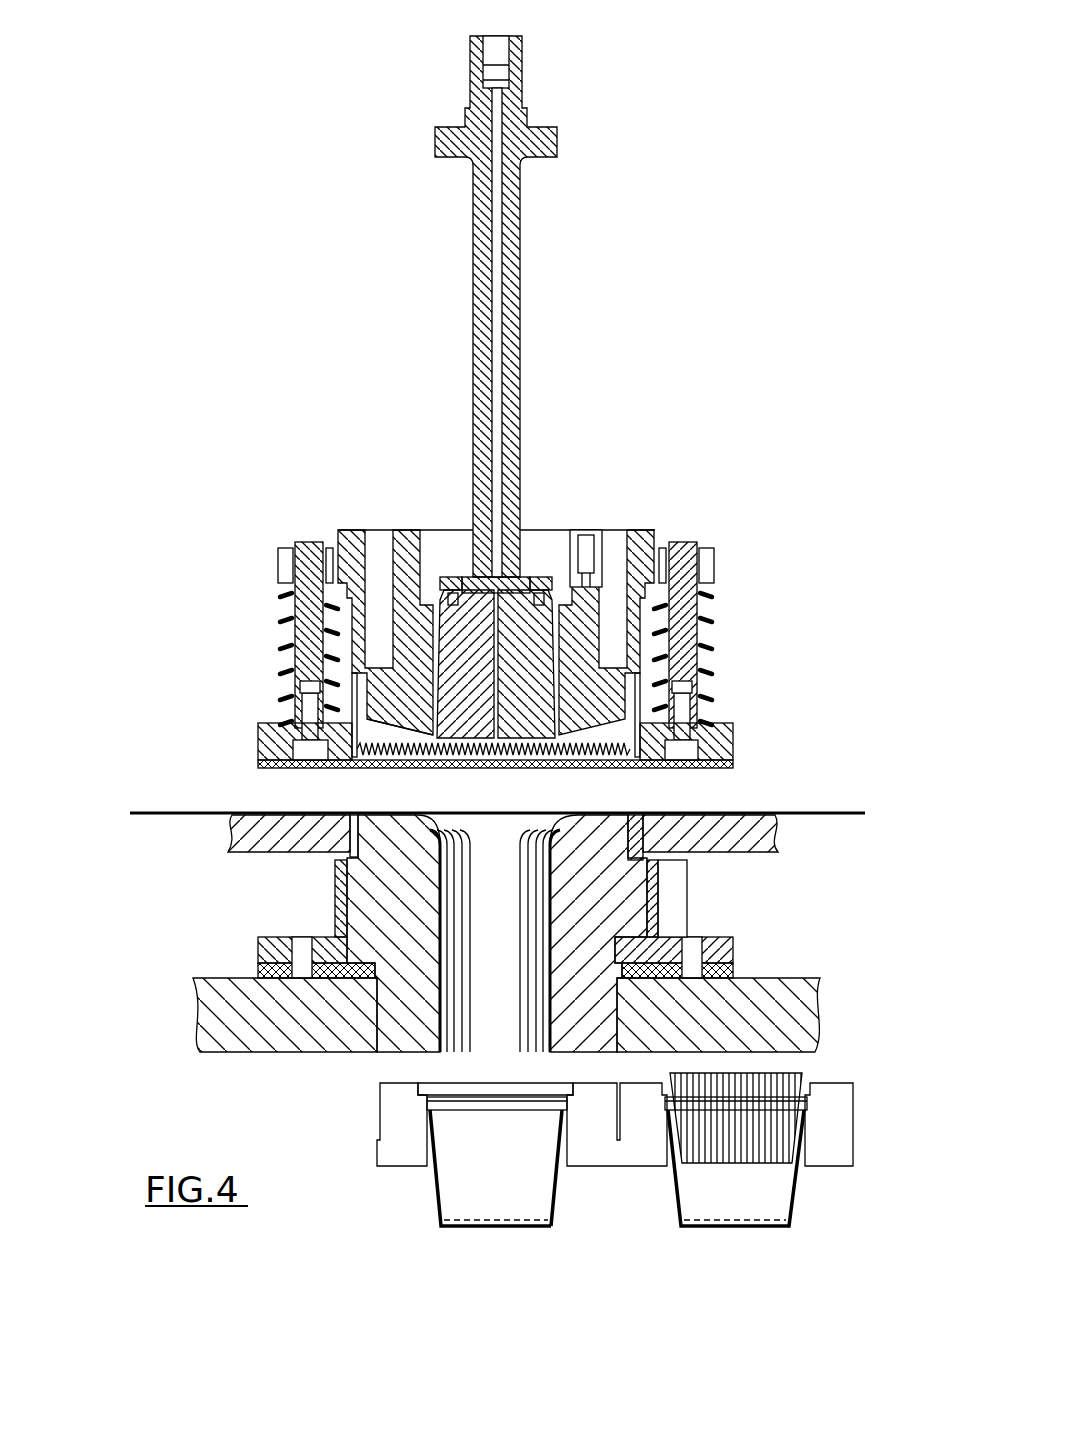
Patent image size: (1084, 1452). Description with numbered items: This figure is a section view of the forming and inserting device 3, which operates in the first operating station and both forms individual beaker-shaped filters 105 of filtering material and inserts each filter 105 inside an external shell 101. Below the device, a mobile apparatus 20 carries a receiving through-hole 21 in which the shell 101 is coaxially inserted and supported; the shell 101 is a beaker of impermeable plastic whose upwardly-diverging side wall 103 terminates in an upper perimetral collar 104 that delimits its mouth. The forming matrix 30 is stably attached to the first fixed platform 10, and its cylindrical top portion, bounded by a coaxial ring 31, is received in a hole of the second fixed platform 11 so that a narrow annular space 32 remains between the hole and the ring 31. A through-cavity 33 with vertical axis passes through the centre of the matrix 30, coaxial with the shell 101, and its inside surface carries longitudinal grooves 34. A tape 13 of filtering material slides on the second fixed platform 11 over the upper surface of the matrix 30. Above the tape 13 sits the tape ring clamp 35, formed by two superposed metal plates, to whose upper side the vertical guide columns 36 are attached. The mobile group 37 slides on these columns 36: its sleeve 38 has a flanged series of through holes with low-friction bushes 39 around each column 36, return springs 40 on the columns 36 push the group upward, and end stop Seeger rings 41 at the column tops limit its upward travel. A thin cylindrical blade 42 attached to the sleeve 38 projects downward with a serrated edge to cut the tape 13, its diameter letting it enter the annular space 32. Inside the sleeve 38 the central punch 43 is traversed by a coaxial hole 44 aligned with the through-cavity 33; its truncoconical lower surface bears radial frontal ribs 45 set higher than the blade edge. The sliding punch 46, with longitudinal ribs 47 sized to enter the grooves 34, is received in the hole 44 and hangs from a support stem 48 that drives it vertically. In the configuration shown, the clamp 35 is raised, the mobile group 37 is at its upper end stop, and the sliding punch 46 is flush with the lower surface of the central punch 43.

The forming and inserting device 3 is at (331, 322).
The support stem 48 is at (513, 297).
The mobile group 37 is at (358, 517).
The central punch 43 is at (407, 530).
The sleeve 38 is at (643, 545).
The sliding punch 46 is at (518, 595).
The longitudinal ribs 47 is at (555, 620).
The coaxial hole 44 is at (427, 717).
The end stop Seeger rings 41 is at (288, 548).
The bush 39 is at (285, 595).
The guide columns 36 is at (305, 637).
The return springs 40 is at (303, 676).
The cylindrical blade 42 is at (373, 763).
The tape ring clamp 35 is at (725, 740).
The frontal ribs 45 is at (626, 768).
The tape 13 is at (148, 815).
The second fixed platform 11 is at (777, 833).
The narrow annular space 32 is at (355, 832).
The ring 31 is at (660, 833).
The forming matrix 30 is at (628, 907).
The longitudinal grooves 34 is at (455, 960).
The through-cavity 33 is at (511, 932).
The first fixed platform 10 is at (797, 1018).
The mobile apparatus 20 is at (388, 1110).
The receiving through-hole 21 is at (428, 1135).
The external shell 101 is at (484, 1228).
The side wall 103 is at (558, 1185).
The upper perimetral collar 104 is at (567, 1097).
The filter 105 is at (730, 1163).